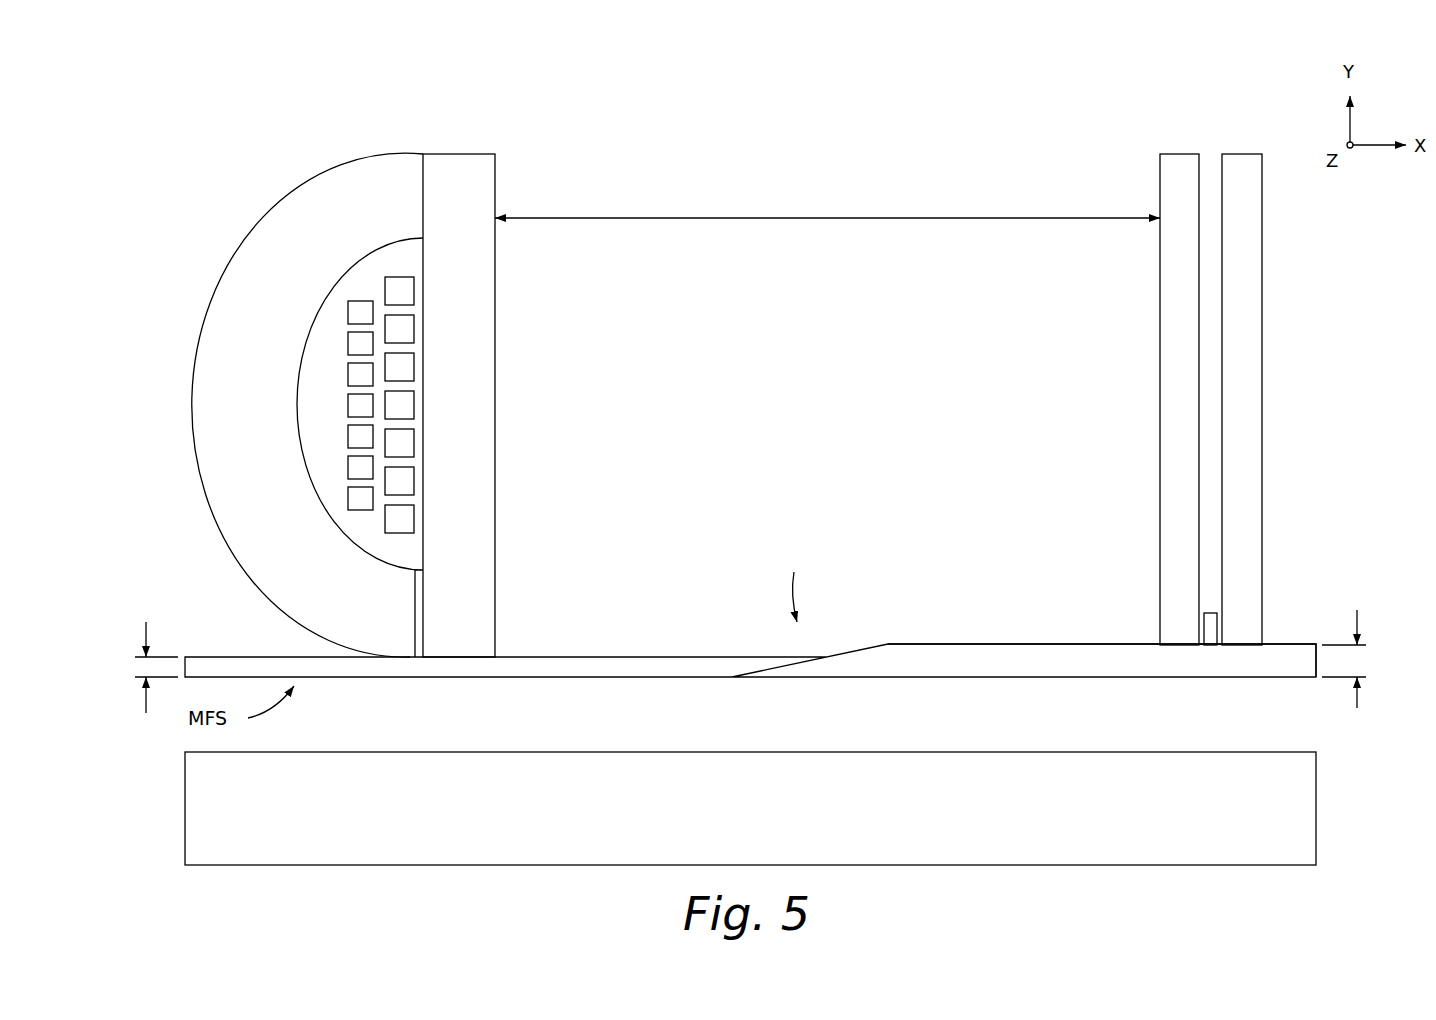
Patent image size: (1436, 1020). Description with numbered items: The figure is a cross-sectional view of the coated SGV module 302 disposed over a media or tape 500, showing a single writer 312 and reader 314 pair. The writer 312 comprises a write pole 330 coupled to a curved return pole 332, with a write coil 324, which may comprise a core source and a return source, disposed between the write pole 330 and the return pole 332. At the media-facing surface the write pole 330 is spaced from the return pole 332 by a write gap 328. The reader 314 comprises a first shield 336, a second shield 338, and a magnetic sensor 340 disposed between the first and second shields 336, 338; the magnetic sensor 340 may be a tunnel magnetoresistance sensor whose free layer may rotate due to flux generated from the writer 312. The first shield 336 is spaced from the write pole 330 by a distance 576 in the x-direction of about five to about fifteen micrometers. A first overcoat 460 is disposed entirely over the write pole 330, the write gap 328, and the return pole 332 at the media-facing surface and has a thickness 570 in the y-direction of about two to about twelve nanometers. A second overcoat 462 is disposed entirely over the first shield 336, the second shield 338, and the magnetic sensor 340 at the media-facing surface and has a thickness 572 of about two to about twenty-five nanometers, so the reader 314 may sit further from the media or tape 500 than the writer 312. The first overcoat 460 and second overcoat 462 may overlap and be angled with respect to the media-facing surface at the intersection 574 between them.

The coated SGV module 302 is at (187, 90).
The writer 312 is at (250, 173).
The reader 314 is at (1133, 172).
The write coil 324 is at (416, 329).
The write gap 328 is at (418, 612).
The write pole 330 is at (479, 417).
The return pole 332 is at (275, 417).
The first shield 336 is at (1177, 393).
The second shield 338 is at (1242, 393).
The magnetic sensor 340 is at (1213, 626).
The first overcoat 460 is at (219, 668).
The second overcoat 462 is at (1007, 658).
The media or tape 500 is at (780, 817).
The thickness 570 is at (146, 667).
The thickness 572 is at (1357, 660).
The intersection 574 is at (804, 583).
The distance 576 is at (826, 218).